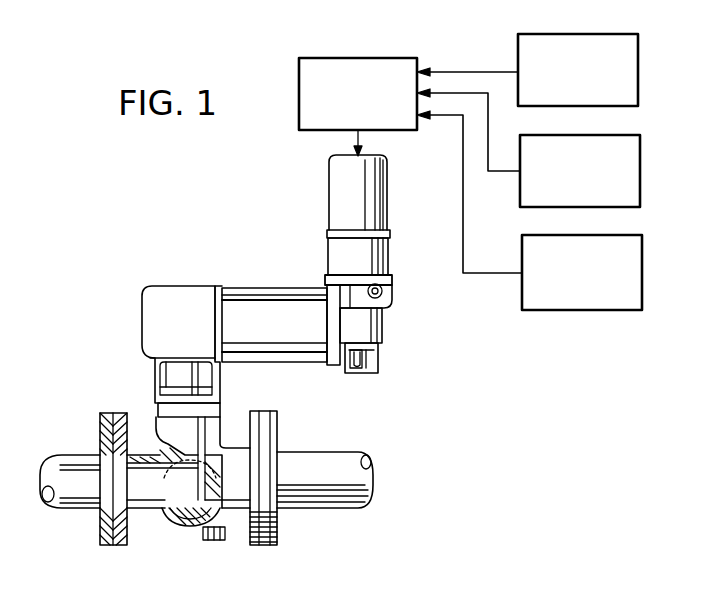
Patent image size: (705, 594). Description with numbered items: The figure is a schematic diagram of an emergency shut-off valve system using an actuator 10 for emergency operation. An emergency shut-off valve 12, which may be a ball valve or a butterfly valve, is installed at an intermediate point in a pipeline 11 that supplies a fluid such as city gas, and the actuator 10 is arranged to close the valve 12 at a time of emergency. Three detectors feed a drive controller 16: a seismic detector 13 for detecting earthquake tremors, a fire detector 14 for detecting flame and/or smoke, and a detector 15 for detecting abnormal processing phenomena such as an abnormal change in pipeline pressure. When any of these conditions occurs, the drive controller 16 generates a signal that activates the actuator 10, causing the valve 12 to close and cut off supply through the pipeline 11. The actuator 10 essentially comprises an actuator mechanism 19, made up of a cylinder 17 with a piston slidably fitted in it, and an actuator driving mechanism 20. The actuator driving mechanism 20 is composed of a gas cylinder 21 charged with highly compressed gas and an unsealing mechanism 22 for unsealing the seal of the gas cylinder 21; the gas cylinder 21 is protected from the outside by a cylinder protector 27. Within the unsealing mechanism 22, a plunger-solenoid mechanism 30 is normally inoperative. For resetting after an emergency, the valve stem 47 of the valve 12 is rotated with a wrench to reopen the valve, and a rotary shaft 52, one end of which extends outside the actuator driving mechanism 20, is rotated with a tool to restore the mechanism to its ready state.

The actuator for emergency operation 10 is at (299, 258).
The pipeline 11 is at (328, 500).
The emergency shut-off valve 12 is at (182, 530).
The seismic detector 13 is at (640, 53).
The fire detector 14 is at (641, 160).
The detector 15 is at (643, 265).
The drive controller 16 is at (383, 58).
The cylinder 17 is at (274, 365).
The actuator mechanism 19 is at (318, 280).
The actuator driving mechanism 20 is at (433, 153).
The gas cylinder 21 is at (365, 384).
The unsealing mechanism 22 is at (400, 155).
The cylinder protector 27 is at (378, 362).
The plunger-solenoid mechanism 30 is at (330, 176).
The valve stem 47 is at (183, 377).
The rotary shaft 52 is at (379, 355).